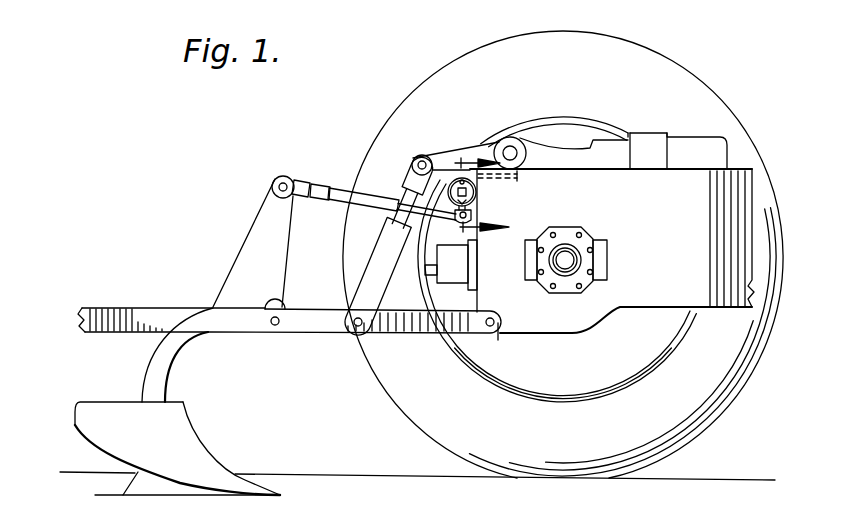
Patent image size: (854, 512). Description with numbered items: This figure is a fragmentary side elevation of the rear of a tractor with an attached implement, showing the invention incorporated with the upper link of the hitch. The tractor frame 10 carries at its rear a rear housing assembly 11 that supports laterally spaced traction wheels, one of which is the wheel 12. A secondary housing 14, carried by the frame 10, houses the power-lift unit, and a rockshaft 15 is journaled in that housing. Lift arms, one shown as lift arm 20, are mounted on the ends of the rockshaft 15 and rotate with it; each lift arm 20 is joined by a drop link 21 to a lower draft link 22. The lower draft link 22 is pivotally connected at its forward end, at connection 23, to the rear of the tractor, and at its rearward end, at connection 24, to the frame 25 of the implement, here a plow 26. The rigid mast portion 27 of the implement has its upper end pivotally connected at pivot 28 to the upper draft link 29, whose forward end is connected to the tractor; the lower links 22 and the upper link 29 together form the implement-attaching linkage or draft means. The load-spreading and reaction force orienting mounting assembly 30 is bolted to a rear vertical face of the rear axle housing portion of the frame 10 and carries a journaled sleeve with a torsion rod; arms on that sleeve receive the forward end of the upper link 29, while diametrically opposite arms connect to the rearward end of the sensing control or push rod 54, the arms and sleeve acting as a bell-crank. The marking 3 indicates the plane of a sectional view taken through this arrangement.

The frame 10 is at (733, 180).
The rear housing assembly 11 is at (576, 228).
The traction wheel 12 is at (633, 73).
The secondary housing 14 is at (563, 155).
The rockshaft 15 is at (510, 148).
The lift arm 20 is at (445, 158).
The drop link 21 is at (388, 247).
The lower draft link 22 is at (328, 320).
The forward pivot connection 23 is at (497, 335).
The rearward pivot connection 24 is at (273, 328).
The implement frame 25 is at (209, 317).
The plow 26 is at (86, 396).
The rigid mast portion 27 is at (273, 208).
The mast pivot connection 28 is at (284, 176).
The upper draft link 29 is at (330, 188).
The mounting assembly 30 is at (486, 197).
The sensing control rod 54 is at (518, 178).
The section line 3- 3 is at (476, 193).